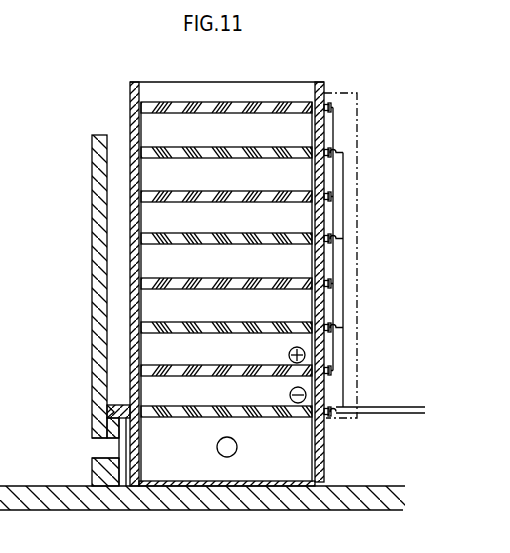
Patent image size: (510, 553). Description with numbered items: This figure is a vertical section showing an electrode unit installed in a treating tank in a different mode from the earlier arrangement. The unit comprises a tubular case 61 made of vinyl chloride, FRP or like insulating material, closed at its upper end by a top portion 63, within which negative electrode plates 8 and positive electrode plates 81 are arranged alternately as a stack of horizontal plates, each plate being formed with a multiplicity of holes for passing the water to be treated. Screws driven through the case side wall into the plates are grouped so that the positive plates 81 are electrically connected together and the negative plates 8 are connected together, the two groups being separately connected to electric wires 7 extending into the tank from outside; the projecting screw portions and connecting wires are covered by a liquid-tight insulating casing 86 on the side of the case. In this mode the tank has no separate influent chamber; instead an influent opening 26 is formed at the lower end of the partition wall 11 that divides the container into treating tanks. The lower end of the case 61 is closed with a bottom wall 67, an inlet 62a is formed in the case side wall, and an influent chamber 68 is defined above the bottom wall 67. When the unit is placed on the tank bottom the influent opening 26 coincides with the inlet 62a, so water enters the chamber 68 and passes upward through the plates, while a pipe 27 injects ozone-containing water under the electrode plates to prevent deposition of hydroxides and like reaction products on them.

The tubular case 61 is at (130, 86).
The top cover 63 is at (212, 82).
The insulating casing 86 is at (357, 162).
The partition 11 is at (92, 205).
The positive electrode plate 81 is at (173, 366).
The negative electrode plate 8 is at (175, 407).
The electric wire 7 is at (383, 406).
The influent opening 26 is at (100, 447).
The inlet 62a is at (138, 447).
The pipe 27 is at (237, 444).
The bottom wall 67 is at (266, 481).
The influent chamber 68 is at (312, 430).